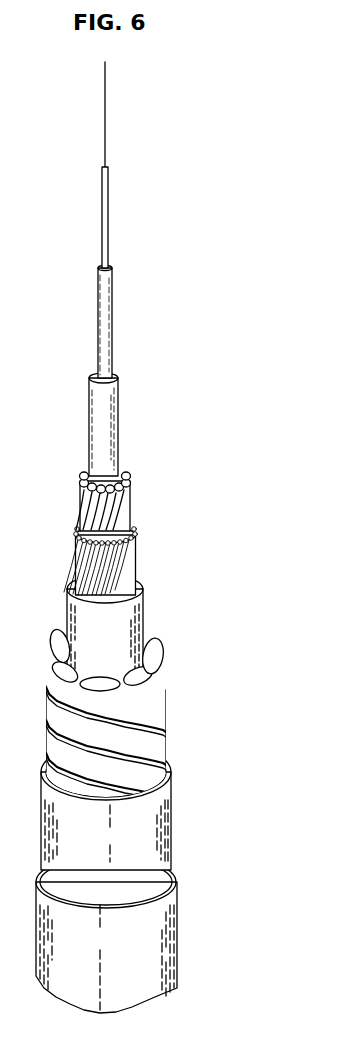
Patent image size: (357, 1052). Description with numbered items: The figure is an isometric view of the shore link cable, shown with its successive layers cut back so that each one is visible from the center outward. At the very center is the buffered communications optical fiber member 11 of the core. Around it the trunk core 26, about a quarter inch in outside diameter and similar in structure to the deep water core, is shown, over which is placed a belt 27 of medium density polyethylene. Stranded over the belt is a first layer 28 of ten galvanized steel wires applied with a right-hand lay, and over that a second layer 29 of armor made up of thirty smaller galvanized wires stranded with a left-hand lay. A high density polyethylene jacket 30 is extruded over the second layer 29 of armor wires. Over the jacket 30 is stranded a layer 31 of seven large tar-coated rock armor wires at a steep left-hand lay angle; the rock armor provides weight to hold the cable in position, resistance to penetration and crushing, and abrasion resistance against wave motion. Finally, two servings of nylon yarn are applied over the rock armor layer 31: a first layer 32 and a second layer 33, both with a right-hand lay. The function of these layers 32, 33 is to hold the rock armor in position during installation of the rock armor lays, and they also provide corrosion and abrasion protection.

The buffered communications optical fiber member 11 is at (108, 192).
The trunk core 26 is at (108, 298).
The belt 27 is at (112, 398).
The first layer 28 is at (128, 487).
The second layer 29 is at (126, 547).
The high density polyethylene jacket 30 is at (136, 613).
The layer of rock armor wires 31 is at (158, 693).
The first serving of nylon yarn 32 is at (170, 797).
The second serving of nylon yarn 33 is at (172, 902).